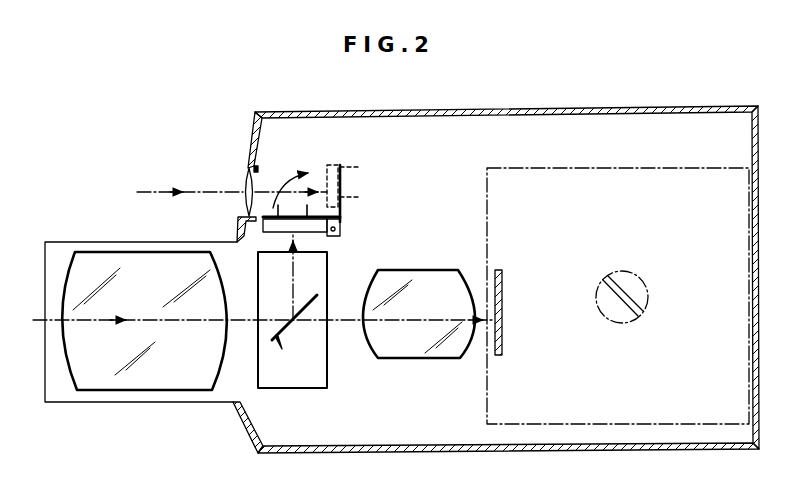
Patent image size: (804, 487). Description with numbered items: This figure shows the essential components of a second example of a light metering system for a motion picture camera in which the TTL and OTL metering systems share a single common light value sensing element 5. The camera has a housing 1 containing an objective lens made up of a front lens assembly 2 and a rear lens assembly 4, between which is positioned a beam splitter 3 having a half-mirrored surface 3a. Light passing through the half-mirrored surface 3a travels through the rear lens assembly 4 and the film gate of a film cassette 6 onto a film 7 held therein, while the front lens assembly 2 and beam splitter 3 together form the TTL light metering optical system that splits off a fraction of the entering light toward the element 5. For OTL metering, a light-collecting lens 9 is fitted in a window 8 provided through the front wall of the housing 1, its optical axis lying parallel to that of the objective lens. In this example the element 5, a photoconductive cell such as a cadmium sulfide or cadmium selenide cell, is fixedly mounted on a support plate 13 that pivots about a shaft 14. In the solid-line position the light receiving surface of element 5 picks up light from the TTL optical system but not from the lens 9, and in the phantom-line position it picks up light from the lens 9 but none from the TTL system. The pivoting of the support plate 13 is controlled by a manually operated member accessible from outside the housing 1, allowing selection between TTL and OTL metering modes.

The housing 1 is at (545, 108).
The front lens assembly 2 is at (140, 386).
The beam splitter 3 is at (318, 362).
The half-mirrored surface 3a is at (280, 348).
The rear lens assembly 4 is at (421, 360).
The light value sensing element 5 is at (337, 164).
The film cassette 6 is at (606, 183).
The film 7 is at (502, 291).
The window 8 is at (242, 182).
The light-collecting lens 9 is at (246, 201).
The support plate 13 is at (338, 216).
The shaft 14 is at (337, 229).